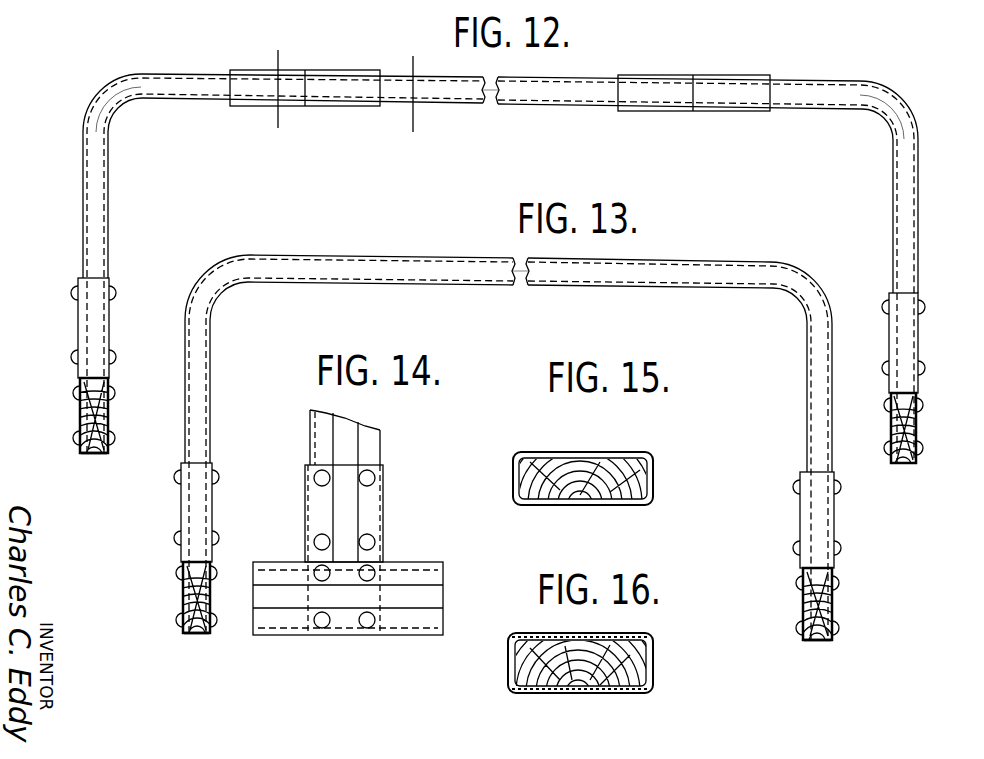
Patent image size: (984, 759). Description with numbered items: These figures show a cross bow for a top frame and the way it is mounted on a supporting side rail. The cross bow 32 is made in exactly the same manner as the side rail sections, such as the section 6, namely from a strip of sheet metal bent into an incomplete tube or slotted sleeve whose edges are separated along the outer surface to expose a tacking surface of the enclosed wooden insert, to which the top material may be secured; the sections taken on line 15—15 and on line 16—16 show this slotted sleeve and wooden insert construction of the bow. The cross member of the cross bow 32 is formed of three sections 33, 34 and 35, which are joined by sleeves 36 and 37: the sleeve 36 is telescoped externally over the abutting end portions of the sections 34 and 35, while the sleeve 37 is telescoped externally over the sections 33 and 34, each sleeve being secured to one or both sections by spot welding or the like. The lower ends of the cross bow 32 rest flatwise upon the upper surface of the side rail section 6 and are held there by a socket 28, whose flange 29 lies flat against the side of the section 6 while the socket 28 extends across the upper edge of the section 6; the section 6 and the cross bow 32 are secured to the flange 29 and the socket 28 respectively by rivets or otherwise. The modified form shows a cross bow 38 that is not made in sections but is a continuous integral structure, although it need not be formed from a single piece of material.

In FIG. 12, the side rail section 6 is at (72, 438).
In FIG. 13, the side rail section 6 is at (200, 640).
In FIG. 14, the side rail section 6 is at (368, 600).
In FIG. 12, the section line 15- 15 is at (416, 93).
In FIG. 12, the section line 16- 16 is at (280, 87).
In FIG. 12, the socket 28 is at (108, 322).
In FIG. 13, the socket 28 is at (200, 509).
In FIG. 14, the socket 28 is at (370, 501).
In FIG. 12, the flange 29 is at (108, 418).
In FIG. 13, the flange 29 is at (205, 603).
In FIG. 12, the cross bow 32 is at (105, 226).
In FIG. 13, the cross bow 32 is at (508, 447).
In FIG. 14, the cross bow 32 is at (363, 444).
In FIG. 15, the cross bow 32 is at (650, 463).
In FIG. 16, the cross bow 32 is at (628, 662).
In FIG. 12, the cross bow section 33 is at (115, 110).
In FIG. 12, the cross bow section 34 is at (485, 106).
In FIG. 12, the cross bow section 35 is at (877, 108).
In FIG. 12, the sleeve 36 is at (712, 78).
In FIG. 12, the sleeve 37 is at (325, 68).
In FIG. 16, the sleeve 37 is at (567, 690).
In FIG. 13, the cross bow 38 is at (516, 287).